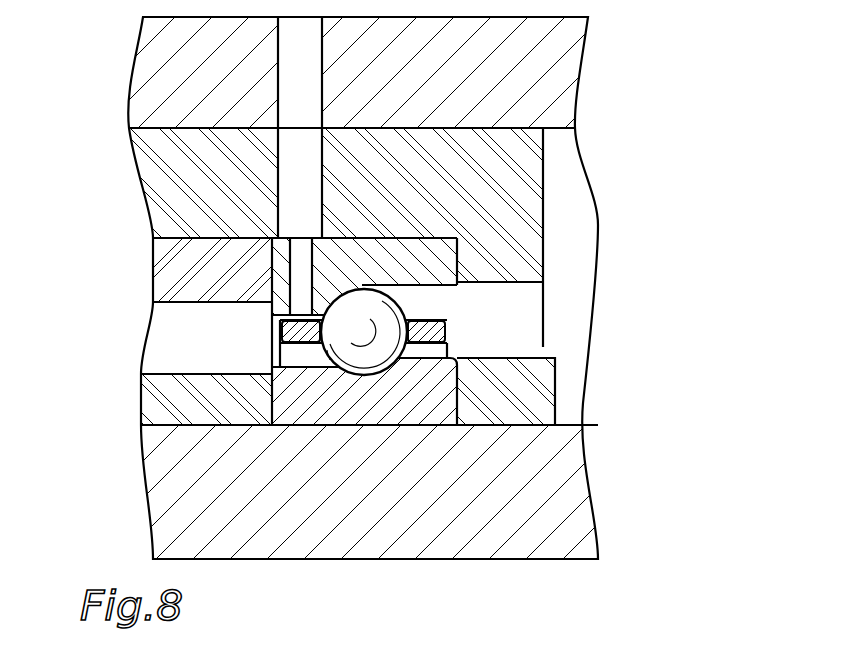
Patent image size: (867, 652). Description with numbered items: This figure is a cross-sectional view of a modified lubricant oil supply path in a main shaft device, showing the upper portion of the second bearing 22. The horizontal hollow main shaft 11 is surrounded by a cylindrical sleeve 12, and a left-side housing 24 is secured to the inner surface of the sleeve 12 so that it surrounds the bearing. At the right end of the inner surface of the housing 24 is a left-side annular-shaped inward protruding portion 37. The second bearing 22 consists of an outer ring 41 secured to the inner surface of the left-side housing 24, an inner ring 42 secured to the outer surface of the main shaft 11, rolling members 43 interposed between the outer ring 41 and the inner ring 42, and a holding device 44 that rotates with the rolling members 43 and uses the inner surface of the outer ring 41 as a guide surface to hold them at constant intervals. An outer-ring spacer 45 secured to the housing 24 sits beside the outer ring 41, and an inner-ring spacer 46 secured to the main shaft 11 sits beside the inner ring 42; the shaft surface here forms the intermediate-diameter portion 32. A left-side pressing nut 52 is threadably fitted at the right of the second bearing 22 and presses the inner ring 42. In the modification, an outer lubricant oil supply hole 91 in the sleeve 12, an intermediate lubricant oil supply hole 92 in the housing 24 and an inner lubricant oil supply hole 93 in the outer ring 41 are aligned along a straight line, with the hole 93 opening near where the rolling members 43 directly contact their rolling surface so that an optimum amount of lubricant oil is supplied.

The main shaft 11 is at (152, 503).
The sleeve 12 is at (560, 78).
The second bearing 22 is at (355, 432).
The left-side housing 24 is at (528, 160).
The intermediate-diameter portion 32 is at (572, 424).
The left-side annular-shaped inward protruding portion 37 is at (536, 268).
The outer ring 41 is at (366, 247).
The inner ring 42 is at (424, 402).
The rolling members 43 is at (350, 374).
The holding device 44 is at (444, 331).
The outer-ring spacer 45 is at (163, 283).
The inner-ring spacer 46 is at (152, 398).
The left-side pressing nut 52 is at (536, 397).
The outer lubricant oil supply hole 91 is at (278, 62).
The intermediate lubricant oil supply hole 92 is at (280, 175).
The inner lubricant oil supply hole 93 is at (292, 266).